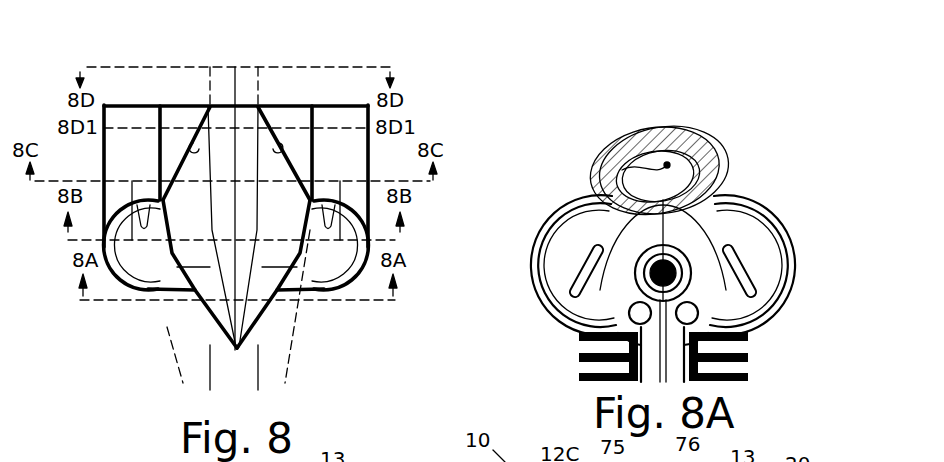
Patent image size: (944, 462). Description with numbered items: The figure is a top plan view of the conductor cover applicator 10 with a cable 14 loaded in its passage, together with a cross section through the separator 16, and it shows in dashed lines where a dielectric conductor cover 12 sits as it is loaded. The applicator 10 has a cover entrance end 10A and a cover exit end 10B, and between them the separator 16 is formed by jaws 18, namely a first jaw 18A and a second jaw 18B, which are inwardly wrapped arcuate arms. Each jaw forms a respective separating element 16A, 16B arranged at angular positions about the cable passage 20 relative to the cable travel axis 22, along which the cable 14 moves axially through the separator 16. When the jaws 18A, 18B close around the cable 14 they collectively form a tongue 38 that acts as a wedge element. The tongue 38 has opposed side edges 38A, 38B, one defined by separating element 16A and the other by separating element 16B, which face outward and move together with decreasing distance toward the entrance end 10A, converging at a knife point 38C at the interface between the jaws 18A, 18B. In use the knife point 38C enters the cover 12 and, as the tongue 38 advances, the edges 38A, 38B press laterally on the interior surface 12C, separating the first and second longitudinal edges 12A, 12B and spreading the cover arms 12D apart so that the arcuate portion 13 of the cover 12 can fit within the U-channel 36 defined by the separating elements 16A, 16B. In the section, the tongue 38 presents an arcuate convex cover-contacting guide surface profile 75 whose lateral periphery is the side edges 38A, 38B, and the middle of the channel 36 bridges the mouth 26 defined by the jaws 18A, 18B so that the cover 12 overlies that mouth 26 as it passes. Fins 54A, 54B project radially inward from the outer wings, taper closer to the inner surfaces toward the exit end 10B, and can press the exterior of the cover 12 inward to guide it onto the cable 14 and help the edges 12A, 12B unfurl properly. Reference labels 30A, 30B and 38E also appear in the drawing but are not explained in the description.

In FIG. 8, the applicator 10 is at (70, 66).
In FIG. 8A, the applicator 10 is at (505, 70).
In FIG. 8, the cover entrance end 10A is at (197, 360).
In FIG. 8, the cover exit end 10B is at (233, 62).
In FIG. 8, the dielectric conductor cover 12 is at (272, 103).
In FIG. 8A, the dielectric conductor cover 12 is at (643, 130).
In FIG. 8A, the first longitudinal edge 12A is at (537, 230).
In FIG. 8A, the second longitudinal edge 12B is at (738, 180).
In FIG. 8A, the interior surface 12C is at (657, 160).
In FIG. 8A, the cover arms 12D is at (740, 183).
In FIG. 8A, the portion of the conductor cover 13 is at (690, 137).
In FIG. 8, the cable 14 is at (258, 87).
In FIG. 8A, the cable 14 is at (760, 309).
In FIG. 8, the separator 16 is at (265, 312).
In FIG. 8A, the separator 16 is at (700, 143).
In FIG. 8, the first separating element 16A is at (281, 258).
In FIG. 8A, the first separating element 16A is at (787, 227).
In FIG. 8, the second separating element 16B is at (158, 276).
In FIG. 8A, the second separating element 16B is at (573, 220).
In FIG. 8A, the jaws 18 is at (792, 262).
In FIG. 8A, the first jaw 18A is at (790, 261).
In FIG. 8A, the second jaw 18B is at (550, 289).
In FIG. 8A, the cable passage 20 is at (740, 257).
In FIG. 8A, the cable travel axis 22 is at (667, 330).
In FIG. 8, the mouth 26 is at (233, 157).
In FIG. 8A, the mouth 26 is at (600, 180).
In FIG. 8A, the first foot 30A is at (749, 354).
In FIG. 8A, the second foot 30B is at (579, 351).
In FIG. 8, the U-channel 36 is at (150, 287).
In FIG. 8A, the U-channel 36 is at (802, 218).
In FIG. 8, the tongue 38 is at (143, 363).
In FIG. 8A, the tongue 38 is at (718, 160).
In FIG. 8, the first side edge 38A is at (270, 310).
In FIG. 8A, the first side edge 38A is at (790, 225).
In FIG. 8, the second side edge 38B is at (190, 305).
In FIG. 8A, the second side edge 38B is at (580, 210).
In FIG. 8, the knife point 38C is at (237, 352).
In FIG. 8, the wing notch 38E is at (158, 208).
In FIG. 8, the first fin 54A is at (275, 157).
In FIG. 8, the second fin 54B is at (197, 150).
In FIG. 8A, the cover-contacting guide surface profile 75 is at (698, 143).